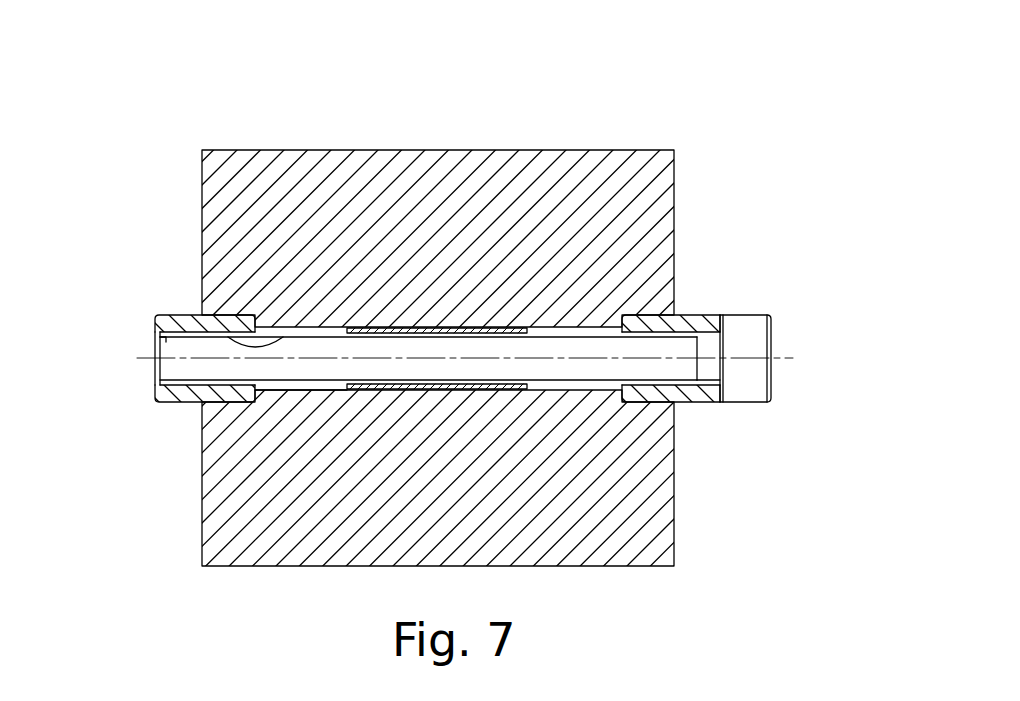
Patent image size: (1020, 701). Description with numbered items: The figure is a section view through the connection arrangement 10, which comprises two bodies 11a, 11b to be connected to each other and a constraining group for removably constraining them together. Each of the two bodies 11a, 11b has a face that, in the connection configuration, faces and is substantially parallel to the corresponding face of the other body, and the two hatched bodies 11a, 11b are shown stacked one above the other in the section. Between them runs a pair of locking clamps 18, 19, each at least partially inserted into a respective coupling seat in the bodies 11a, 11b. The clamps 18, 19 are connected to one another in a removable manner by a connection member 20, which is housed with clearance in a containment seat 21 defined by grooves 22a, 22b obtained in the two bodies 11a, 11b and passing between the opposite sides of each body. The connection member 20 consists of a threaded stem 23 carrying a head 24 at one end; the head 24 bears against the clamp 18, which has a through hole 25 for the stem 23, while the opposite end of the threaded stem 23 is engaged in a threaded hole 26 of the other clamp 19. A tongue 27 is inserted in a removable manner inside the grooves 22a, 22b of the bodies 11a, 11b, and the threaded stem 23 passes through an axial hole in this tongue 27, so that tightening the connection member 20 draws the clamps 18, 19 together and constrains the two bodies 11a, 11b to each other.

The connection arrangement 10 is at (702, 127).
The body 11a is at (436, 147).
The body 11b is at (679, 558).
The locking clamp 18 is at (697, 400).
The locking clamp 19 is at (160, 402).
The connection member 20 is at (777, 317).
The containment seat 21 is at (601, 326).
The groove 22a is at (230, 336).
The groove 22b is at (548, 388).
The threaded stem 23 is at (708, 343).
The head 24 is at (758, 382).
The through hole 25 is at (708, 380).
The threaded hole 26 is at (157, 345).
The tongue 27 is at (370, 388).